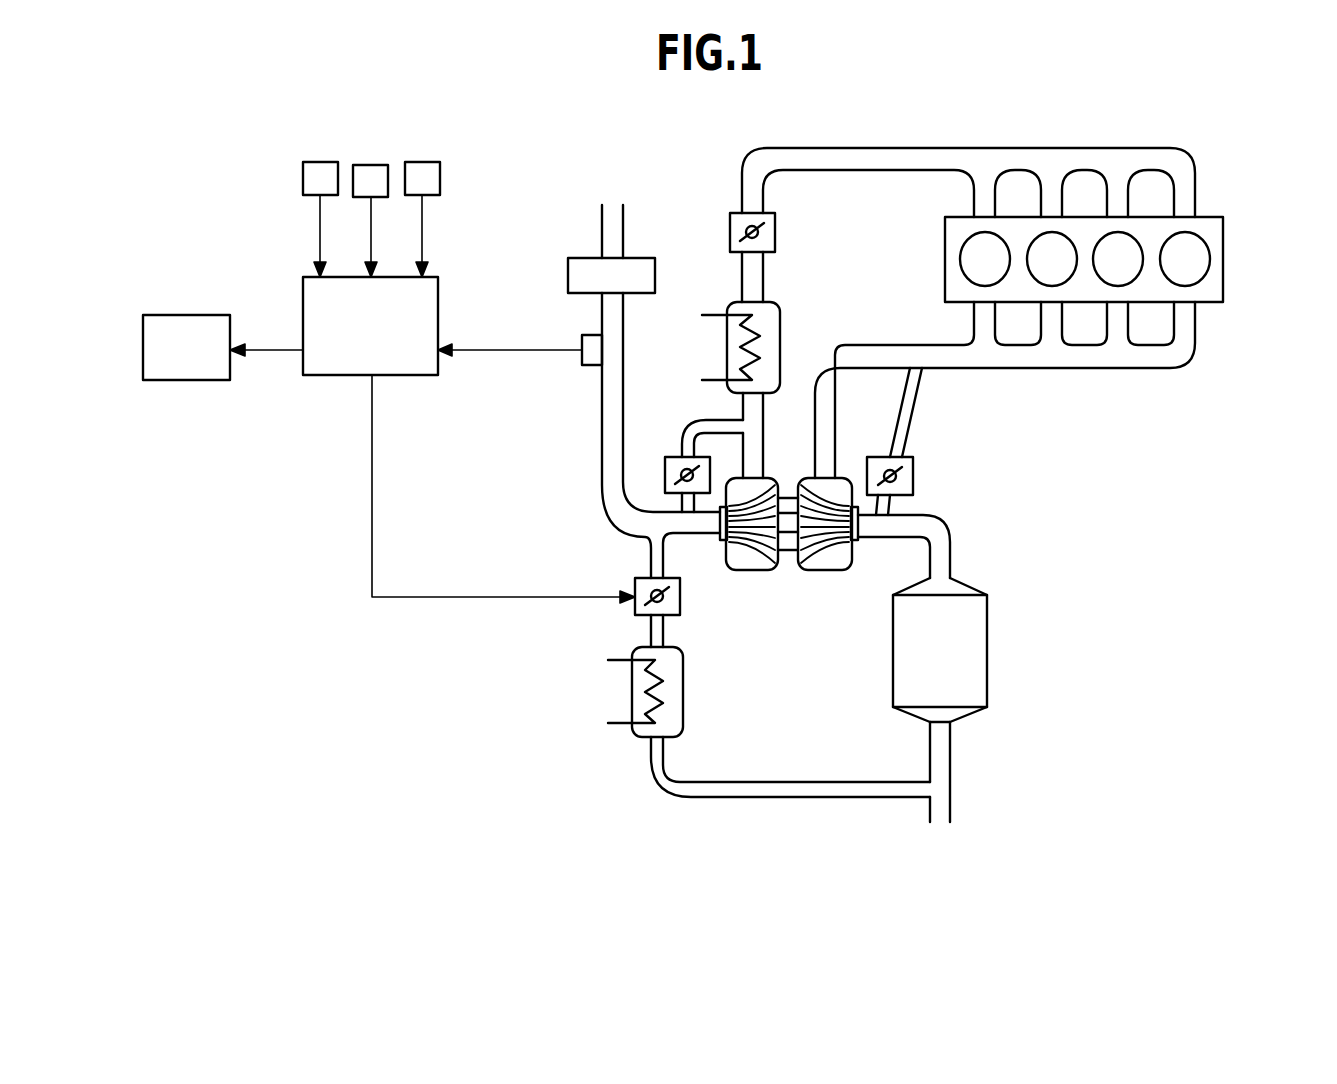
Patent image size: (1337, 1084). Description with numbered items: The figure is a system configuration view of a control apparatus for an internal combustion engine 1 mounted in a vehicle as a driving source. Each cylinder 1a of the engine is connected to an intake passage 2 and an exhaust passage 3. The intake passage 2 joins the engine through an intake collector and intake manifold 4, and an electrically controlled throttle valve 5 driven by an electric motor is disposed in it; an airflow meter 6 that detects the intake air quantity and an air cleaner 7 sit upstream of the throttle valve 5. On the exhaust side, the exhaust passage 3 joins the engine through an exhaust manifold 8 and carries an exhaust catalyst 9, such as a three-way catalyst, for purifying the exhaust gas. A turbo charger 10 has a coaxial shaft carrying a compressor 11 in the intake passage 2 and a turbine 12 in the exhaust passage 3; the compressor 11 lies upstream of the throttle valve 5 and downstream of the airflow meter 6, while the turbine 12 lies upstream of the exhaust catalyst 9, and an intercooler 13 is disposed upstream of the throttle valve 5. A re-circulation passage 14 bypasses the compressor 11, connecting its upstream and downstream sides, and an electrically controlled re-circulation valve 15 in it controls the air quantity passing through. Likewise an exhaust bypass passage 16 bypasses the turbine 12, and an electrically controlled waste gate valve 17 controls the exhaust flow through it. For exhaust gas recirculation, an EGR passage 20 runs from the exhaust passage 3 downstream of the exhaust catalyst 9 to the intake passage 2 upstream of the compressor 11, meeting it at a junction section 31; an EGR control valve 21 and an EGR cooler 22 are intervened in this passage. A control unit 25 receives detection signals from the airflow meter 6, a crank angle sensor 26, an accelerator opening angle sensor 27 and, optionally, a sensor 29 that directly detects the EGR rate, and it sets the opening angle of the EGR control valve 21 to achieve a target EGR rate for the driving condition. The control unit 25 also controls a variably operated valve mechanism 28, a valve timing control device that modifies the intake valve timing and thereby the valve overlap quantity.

The internal combustion engine 1 is at (1123, 264).
The cylinder 1a is at (983, 243).
The intake passage 2 is at (625, 315).
The exhaust passage 3 is at (950, 552).
The intake collector and intake manifold 4 is at (1119, 158).
The throttle valve 5 is at (730, 233).
The airflow meter 6 is at (592, 358).
The air cleaner 7 is at (644, 257).
The exhaust manifold 8 is at (1057, 366).
The exhaust catalyst 9 is at (987, 644).
The turbo charger 10 is at (789, 505).
The compressor 11 is at (759, 568).
The turbine 12 is at (827, 568).
The intercooler 13 is at (783, 320).
The re-circulation passage 14 is at (702, 412).
The re-circulation valve 15 is at (672, 455).
The exhaust bypass passage 16 is at (892, 507).
The waste gate valve 17 is at (913, 469).
The EGR passage 20 is at (793, 790).
The EGR control valve 21 is at (680, 600).
The EGR cooler 22 is at (683, 692).
The control unit 25 is at (330, 376).
The crank angle sensor 26 is at (320, 178).
The accelerator opening angle sensor 27 is at (370, 181).
The variably operated valve mechanism 28 is at (188, 381).
The sensor 29 is at (422, 178).
The junction section 31 is at (695, 528).